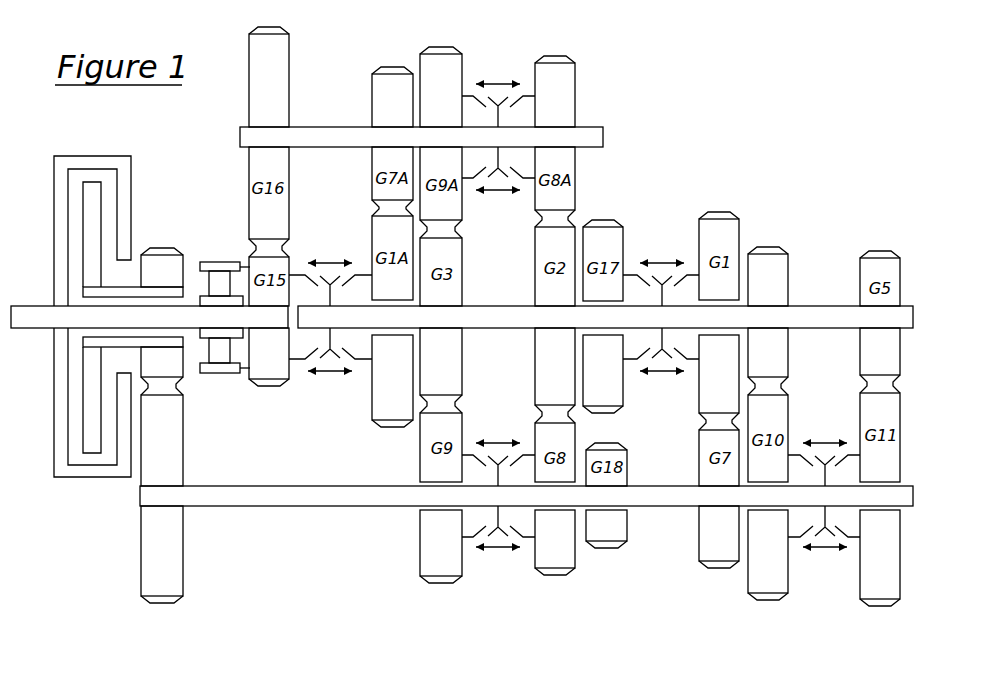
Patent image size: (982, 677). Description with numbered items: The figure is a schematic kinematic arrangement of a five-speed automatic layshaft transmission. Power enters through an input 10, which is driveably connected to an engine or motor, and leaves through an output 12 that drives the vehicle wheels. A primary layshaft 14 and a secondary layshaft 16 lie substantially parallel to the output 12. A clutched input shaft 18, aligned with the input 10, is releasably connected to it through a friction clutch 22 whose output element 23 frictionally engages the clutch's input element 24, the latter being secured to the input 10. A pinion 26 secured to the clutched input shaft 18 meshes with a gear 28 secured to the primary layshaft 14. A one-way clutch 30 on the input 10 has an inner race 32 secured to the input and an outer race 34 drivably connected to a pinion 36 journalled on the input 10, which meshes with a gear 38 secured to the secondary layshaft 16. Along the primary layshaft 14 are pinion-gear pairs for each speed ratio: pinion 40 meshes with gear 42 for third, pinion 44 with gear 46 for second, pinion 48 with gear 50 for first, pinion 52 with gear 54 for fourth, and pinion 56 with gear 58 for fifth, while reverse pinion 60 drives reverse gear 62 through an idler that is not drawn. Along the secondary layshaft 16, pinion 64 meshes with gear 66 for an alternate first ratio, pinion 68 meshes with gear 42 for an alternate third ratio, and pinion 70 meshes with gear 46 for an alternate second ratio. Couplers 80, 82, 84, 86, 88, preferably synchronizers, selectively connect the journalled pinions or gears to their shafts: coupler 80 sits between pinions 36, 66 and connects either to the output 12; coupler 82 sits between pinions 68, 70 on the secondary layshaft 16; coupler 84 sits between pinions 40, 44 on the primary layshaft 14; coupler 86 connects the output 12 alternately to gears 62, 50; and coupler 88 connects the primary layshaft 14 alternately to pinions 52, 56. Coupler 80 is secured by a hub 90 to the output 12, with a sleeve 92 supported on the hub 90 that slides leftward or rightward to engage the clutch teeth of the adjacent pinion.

The input 10 is at (32, 313).
The output 12 is at (900, 315).
The primary layshaft 14 is at (210, 497).
The secondary layshaft 16 is at (602, 133).
The clutched input shaft 18 is at (116, 272).
The friction clutch 22 is at (104, 289).
The output element 23 is at (93, 197).
The input element 24 is at (62, 208).
The pinion 26 is at (172, 382).
The gear 28 is at (172, 545).
The one-way clutch 30 is at (234, 325).
The inner race 32 is at (212, 300).
The outer race 34 is at (230, 367).
The pinion 36 is at (274, 384).
The gear 38 is at (258, 60).
The pinion 40 is at (425, 597).
The gear 42 is at (450, 375).
The pinion 44 is at (555, 574).
The gear 46 is at (548, 358).
The pinion 48 is at (720, 562).
The gear 50 is at (703, 408).
The pinion 52 is at (768, 598).
The gear 54 is at (788, 263).
The pinion 56 is at (883, 604).
The gear 58 is at (869, 347).
The reverse pinion 60 is at (612, 547).
The reverse gear 62 is at (618, 400).
The pinion 64 is at (393, 68).
The gear 66 is at (375, 408).
The pinion 68 is at (438, 48).
The pinion 70 is at (555, 57).
The coupler 80 is at (337, 196).
The coupler 82 is at (501, 25).
The coupler 84 is at (509, 613).
The coupler 86 is at (668, 222).
The coupler 88 is at (828, 602).
The hub 90 is at (322, 336).
The sleeve 92 is at (336, 372).